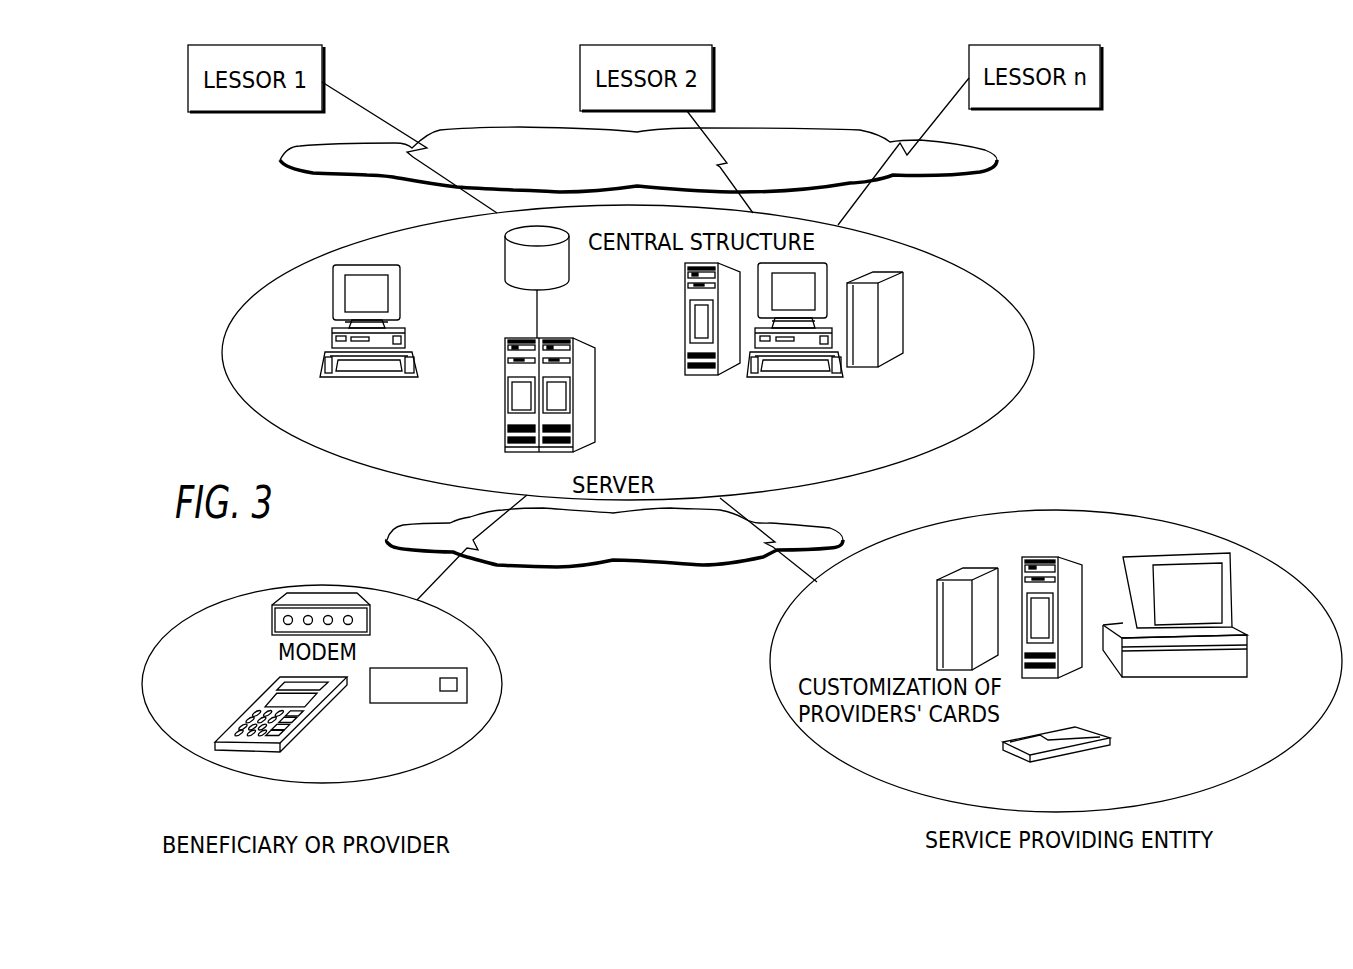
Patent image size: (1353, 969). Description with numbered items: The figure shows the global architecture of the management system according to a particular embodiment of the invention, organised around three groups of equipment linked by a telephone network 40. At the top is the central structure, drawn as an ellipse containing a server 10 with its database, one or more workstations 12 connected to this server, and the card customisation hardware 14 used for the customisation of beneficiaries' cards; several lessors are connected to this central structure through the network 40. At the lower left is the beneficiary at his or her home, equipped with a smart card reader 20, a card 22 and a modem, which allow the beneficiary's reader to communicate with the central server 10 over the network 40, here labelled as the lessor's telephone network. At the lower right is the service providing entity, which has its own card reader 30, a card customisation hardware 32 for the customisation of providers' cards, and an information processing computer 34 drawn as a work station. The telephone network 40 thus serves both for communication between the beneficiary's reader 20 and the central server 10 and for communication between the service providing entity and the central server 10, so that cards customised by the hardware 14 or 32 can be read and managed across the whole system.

The server 10 is at (570, 322).
The workstations 12 is at (427, 321).
The card customisation hardware 14 is at (840, 268).
The smart card reader 20 is at (327, 718).
The card 22 is at (467, 680).
The card reader 30 is at (1112, 737).
The card customisation hardware 32 is at (1093, 573).
The information processing computer 34 is at (1247, 600).
The telephone network 40 is at (362, 172).